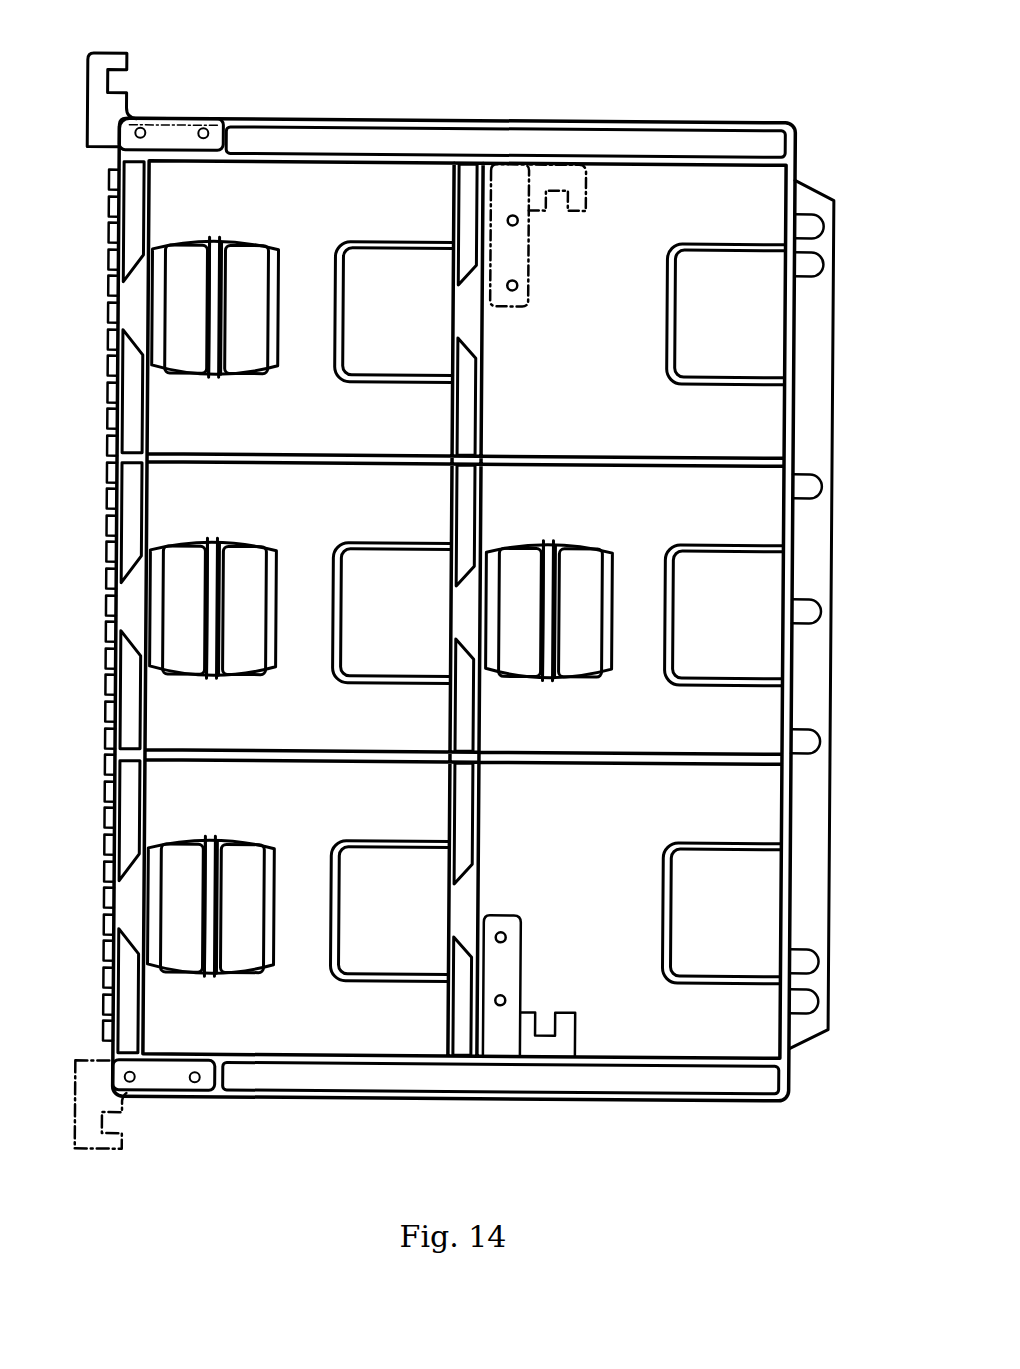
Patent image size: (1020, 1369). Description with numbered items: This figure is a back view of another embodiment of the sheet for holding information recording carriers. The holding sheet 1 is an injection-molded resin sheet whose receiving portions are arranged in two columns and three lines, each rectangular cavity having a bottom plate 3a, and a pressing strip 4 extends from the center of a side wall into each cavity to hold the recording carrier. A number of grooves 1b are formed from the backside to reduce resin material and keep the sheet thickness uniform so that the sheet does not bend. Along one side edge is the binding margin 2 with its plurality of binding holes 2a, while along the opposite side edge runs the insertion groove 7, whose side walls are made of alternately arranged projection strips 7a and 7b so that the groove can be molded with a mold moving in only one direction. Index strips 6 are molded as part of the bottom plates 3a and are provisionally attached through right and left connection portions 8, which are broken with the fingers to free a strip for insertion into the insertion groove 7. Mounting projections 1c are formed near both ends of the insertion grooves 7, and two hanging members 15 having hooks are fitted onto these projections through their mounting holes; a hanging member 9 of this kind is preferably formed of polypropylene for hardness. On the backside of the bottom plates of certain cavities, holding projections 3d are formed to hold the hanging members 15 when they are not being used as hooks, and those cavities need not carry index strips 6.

The holding sheet 1 is at (372, 90).
The grooves 1b is at (565, 128).
The mounting projections 1c is at (203, 131).
The binding margin 2 is at (832, 387).
The binding holes 2a is at (822, 263).
The bottom plate 3a is at (420, 186).
The holding projections 3d is at (516, 285).
The pressing strip 4 is at (390, 278).
The index strips 6 is at (247, 272).
The insertion groove 7 is at (106, 580).
The projection strips 7a is at (106, 342).
The projection strips 7b is at (106, 288).
The connection portions 8 is at (243, 373).
The hanging members 9 is at (506, 165).
The hanging members 15 is at (120, 54).